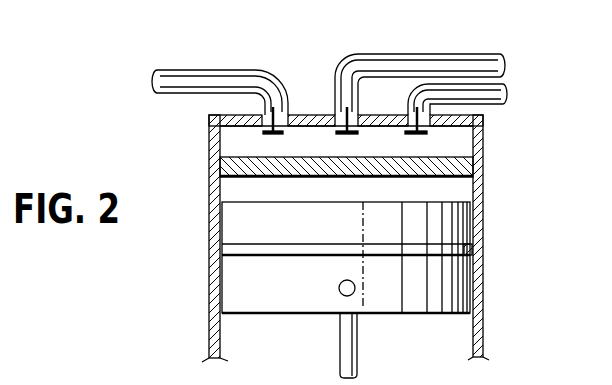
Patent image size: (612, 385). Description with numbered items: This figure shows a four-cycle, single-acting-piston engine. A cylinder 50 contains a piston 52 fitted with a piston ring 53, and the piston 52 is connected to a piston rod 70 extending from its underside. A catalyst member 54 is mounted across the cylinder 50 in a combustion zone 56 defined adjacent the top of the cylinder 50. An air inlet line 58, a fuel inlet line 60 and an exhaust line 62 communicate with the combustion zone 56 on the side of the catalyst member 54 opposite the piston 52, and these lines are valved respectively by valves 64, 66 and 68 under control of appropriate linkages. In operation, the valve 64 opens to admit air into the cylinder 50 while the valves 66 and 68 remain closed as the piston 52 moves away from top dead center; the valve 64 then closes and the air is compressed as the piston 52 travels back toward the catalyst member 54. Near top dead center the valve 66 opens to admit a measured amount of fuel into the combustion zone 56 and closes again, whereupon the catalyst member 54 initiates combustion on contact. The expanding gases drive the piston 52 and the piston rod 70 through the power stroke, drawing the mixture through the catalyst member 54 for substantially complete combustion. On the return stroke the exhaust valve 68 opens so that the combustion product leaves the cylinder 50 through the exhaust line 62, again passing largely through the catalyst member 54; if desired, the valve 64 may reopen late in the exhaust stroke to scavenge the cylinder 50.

The cylinder 50 is at (484, 325).
The piston 52 is at (452, 220).
The piston ring 53 is at (468, 256).
The catalyst member 54 is at (470, 163).
The combustion zone 56 is at (320, 153).
The air inlet line 58 is at (237, 80).
The fuel inlet line 60 is at (423, 57).
The exhaust line 62 is at (493, 104).
The valve 64 is at (263, 138).
The valve 66 is at (350, 135).
The valve 68 is at (427, 135).
The piston rod 70 is at (358, 353).